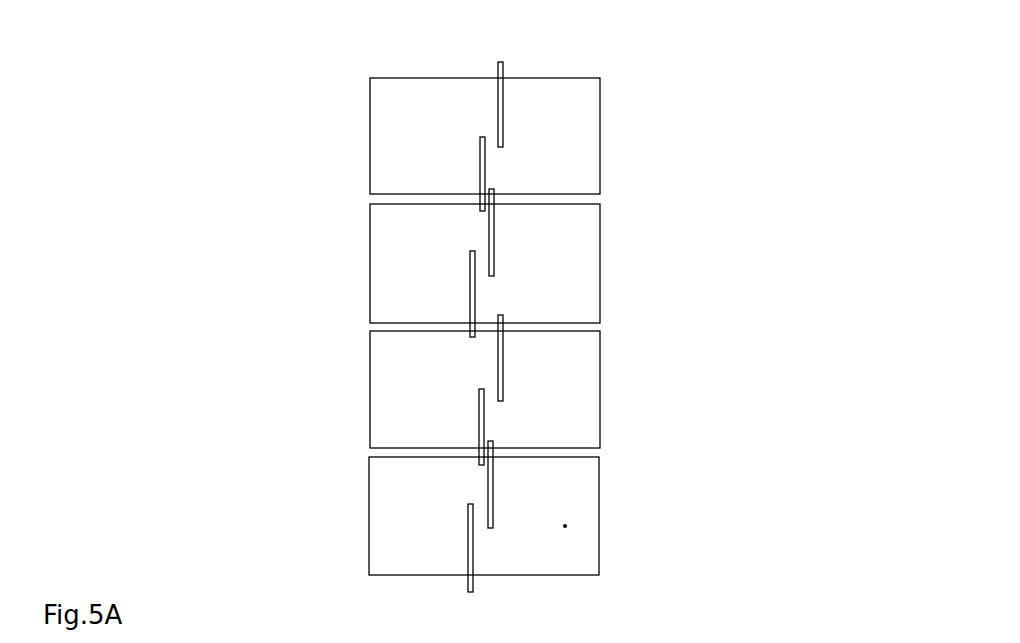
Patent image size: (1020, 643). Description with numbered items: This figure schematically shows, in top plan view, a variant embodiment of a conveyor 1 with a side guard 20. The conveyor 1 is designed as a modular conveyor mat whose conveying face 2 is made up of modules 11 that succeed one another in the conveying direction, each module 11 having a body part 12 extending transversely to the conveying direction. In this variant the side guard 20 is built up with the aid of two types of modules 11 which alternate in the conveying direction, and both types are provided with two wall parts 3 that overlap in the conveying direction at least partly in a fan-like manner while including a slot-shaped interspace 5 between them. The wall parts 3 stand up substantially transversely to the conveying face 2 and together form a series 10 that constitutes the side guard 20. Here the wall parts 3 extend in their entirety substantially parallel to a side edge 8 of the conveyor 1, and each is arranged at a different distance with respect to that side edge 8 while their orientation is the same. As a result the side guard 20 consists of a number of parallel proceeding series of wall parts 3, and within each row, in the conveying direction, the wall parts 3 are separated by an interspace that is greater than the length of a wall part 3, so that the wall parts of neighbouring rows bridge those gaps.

The conveyor 1 is at (206, 105).
The conveying face 2 is at (565, 526).
The wall part 3 is at (470, 553).
The slot-shaped interspace 5 is at (492, 395).
The side edge 8 is at (600, 128).
The series of wall parts 10 is at (475, 267).
The module 11 is at (387, 169).
The body part 12 is at (560, 254).
The side guard 20 is at (442, 53).